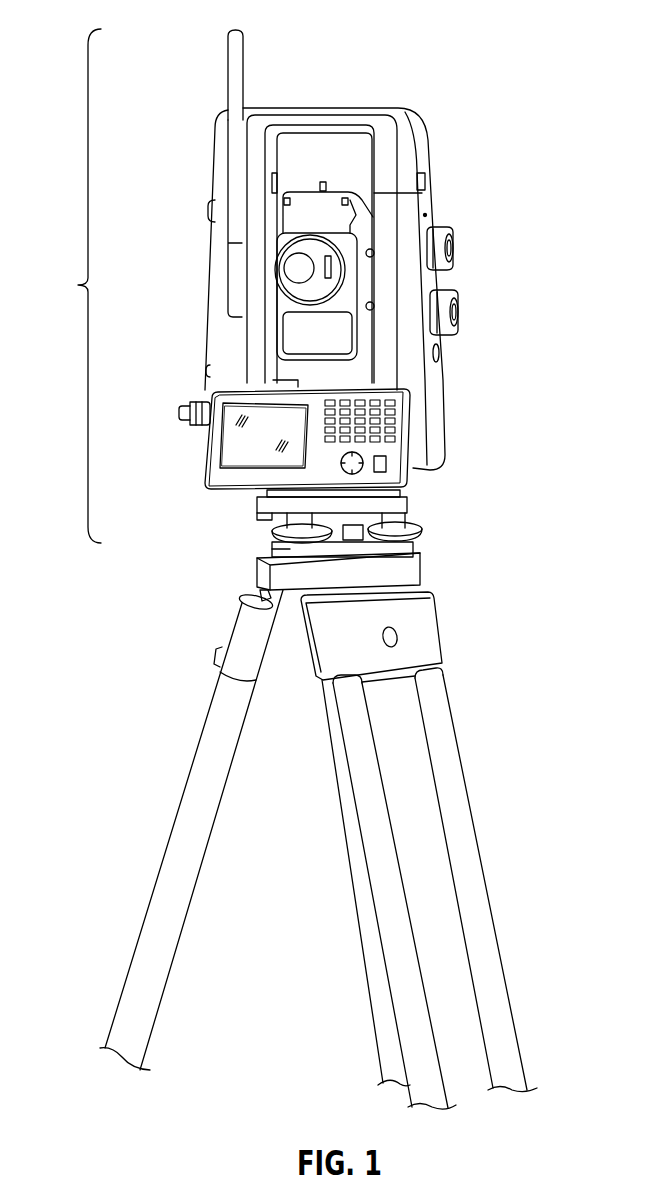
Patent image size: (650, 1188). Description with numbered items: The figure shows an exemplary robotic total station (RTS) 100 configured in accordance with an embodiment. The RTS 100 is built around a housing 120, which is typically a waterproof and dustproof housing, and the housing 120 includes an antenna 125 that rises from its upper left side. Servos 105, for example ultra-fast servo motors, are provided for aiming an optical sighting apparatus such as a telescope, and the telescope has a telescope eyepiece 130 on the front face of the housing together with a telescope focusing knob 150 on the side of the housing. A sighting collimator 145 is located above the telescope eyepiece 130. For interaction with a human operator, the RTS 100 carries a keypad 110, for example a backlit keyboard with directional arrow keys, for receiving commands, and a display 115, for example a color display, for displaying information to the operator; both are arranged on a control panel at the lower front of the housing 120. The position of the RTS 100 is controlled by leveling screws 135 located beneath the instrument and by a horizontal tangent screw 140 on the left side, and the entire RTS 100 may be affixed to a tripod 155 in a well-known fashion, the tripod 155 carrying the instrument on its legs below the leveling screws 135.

The robotic total station 100 is at (62, 286).
The servos 105 is at (455, 248).
The keypad 110 is at (385, 425).
The display 115 is at (255, 440).
The housing 120 is at (228, 350).
The antenna 125 is at (228, 62).
The telescope eyepiece 130 is at (282, 266).
The leveling screws 135 is at (423, 530).
The horizontal tangent screw 140 is at (180, 412).
The sighting collimator 145 is at (345, 191).
The telescope focusing knob 150 is at (458, 306).
The tripod 155 is at (430, 715).